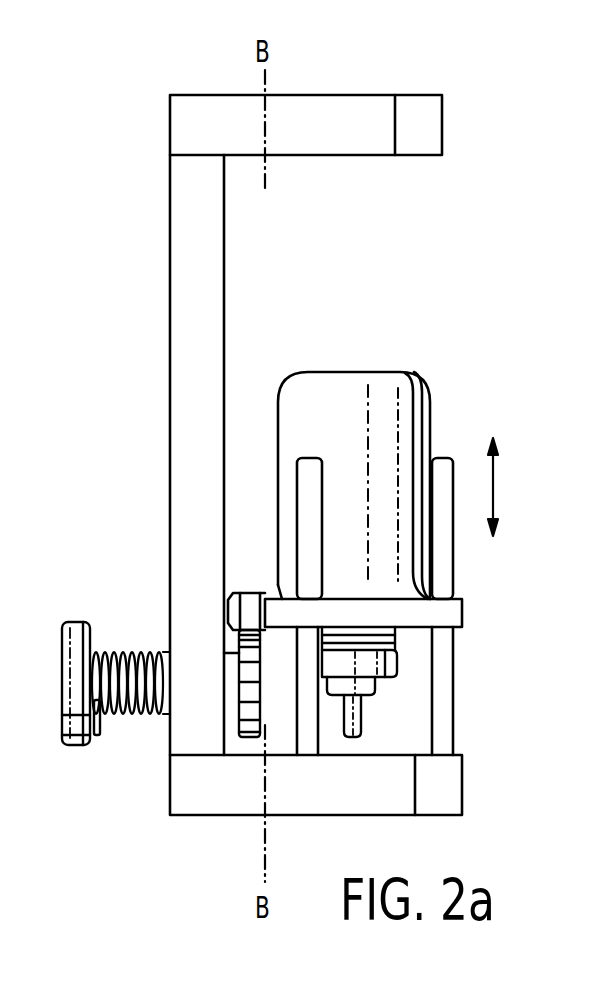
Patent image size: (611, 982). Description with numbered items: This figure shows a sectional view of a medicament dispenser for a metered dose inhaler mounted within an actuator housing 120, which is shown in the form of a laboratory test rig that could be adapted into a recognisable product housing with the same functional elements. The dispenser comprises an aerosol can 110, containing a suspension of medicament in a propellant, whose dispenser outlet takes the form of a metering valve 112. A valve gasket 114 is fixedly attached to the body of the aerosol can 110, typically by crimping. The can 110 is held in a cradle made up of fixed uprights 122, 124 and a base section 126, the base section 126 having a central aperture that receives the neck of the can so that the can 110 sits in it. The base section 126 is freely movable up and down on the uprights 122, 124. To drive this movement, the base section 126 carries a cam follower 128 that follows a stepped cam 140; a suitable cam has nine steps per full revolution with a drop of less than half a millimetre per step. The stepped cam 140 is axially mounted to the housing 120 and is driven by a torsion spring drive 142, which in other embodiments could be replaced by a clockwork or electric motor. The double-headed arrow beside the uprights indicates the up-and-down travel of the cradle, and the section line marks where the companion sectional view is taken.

The aerosol can 110 is at (410, 373).
The metering valve 112 is at (365, 706).
The valve gasket 114 is at (397, 657).
The actuator housing 120 is at (195, 310).
The fixed upright 122 is at (447, 564).
The fixed upright 124 is at (310, 505).
The base section 126 is at (463, 612).
The cam follower 128 is at (246, 600).
The stepped cam 140 is at (246, 710).
The torsion spring drive 142 is at (120, 652).